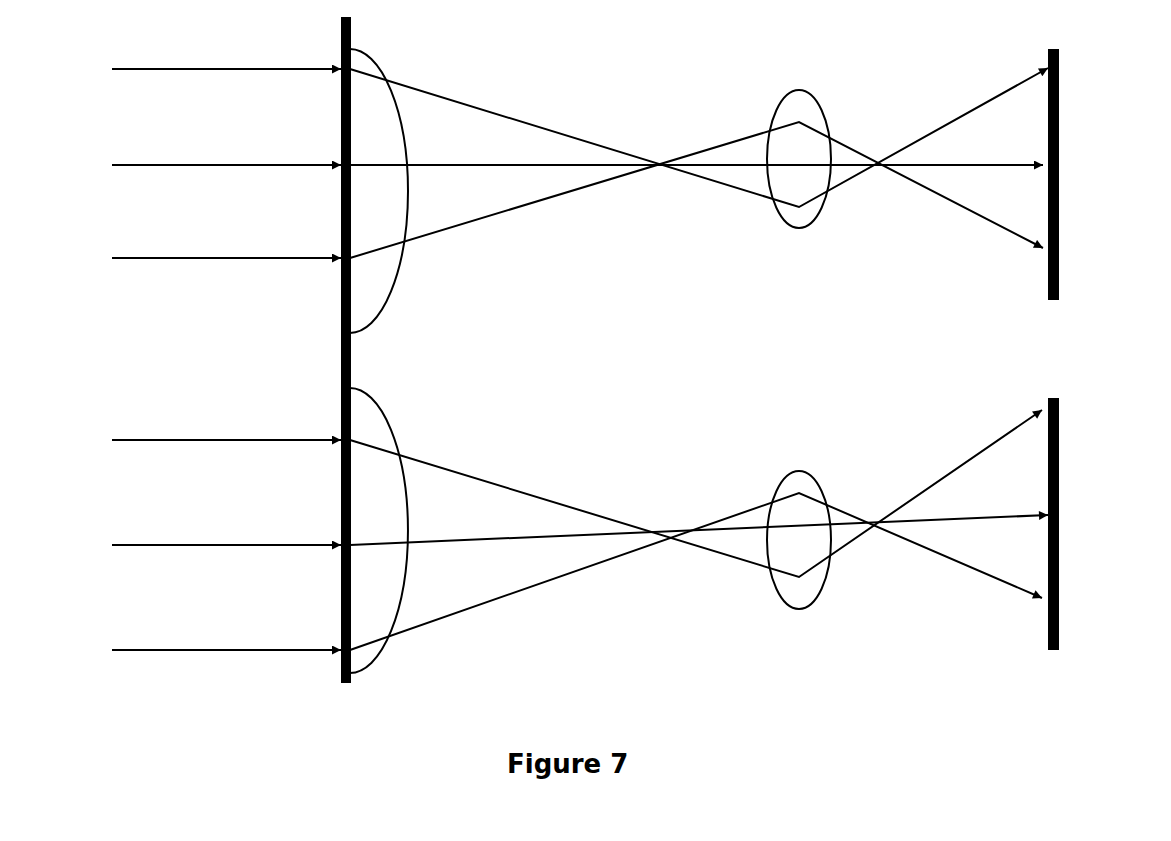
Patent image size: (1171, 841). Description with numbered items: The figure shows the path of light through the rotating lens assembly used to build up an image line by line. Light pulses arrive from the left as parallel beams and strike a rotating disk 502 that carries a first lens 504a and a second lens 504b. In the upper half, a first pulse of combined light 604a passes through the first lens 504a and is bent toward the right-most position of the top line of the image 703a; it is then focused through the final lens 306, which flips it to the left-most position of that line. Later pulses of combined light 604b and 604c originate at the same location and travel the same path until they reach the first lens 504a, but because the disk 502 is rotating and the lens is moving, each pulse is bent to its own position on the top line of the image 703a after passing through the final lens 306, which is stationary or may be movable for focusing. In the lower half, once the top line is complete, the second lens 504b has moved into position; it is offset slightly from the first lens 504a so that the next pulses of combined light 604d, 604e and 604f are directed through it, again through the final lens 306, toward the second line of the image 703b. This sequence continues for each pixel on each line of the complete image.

The rotating disk 502 is at (356, 377).
The first lens 504a is at (400, 179).
The second lens 504b is at (400, 519).
The final lens 306 is at (791, 364).
The image (top line) 703a is at (1066, 190).
The image (second line) 703b is at (1067, 545).
The first pulse of combined light 604a is at (550, 133).
The combined light pulse 604b is at (547, 164).
The combined light pulse 604c is at (547, 195).
The combined light pulse 604d is at (547, 493).
The combined light pulse 604e is at (550, 535).
The combined light pulse 604f is at (547, 576).